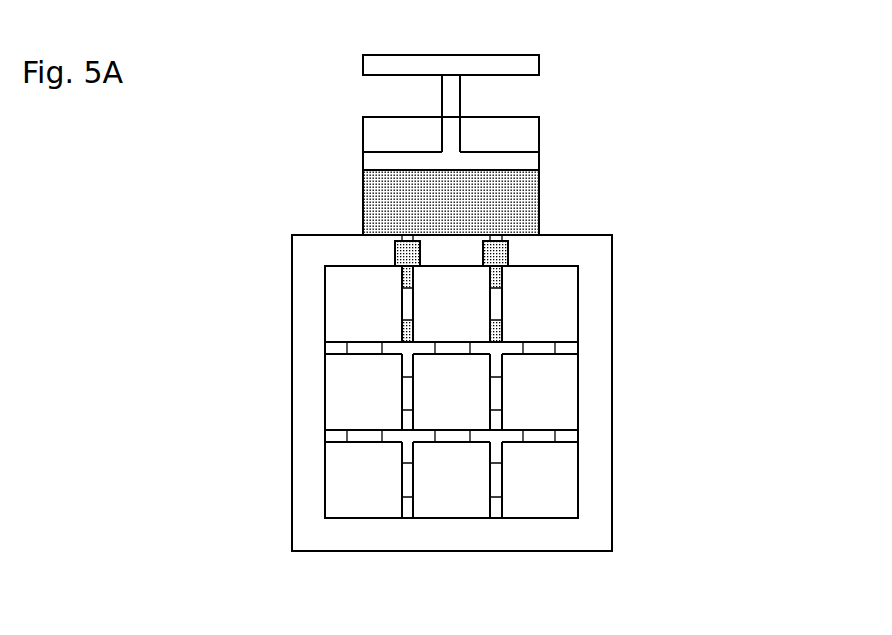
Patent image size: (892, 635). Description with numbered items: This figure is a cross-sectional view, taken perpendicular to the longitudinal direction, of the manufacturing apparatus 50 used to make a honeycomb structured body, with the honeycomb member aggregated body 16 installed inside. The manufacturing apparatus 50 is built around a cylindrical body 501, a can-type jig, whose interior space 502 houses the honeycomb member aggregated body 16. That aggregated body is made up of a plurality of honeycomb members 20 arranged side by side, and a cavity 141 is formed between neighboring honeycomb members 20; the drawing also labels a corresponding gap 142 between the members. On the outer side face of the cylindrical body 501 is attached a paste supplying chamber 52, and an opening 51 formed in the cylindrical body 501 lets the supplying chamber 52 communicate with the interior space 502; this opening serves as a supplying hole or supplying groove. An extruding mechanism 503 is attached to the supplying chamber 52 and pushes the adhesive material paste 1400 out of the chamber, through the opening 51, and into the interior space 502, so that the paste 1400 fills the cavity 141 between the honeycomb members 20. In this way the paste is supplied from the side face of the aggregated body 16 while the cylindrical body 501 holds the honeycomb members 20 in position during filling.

The extruding mechanism 503 is at (497, 62).
The paste supplying chamber 52 is at (540, 133).
The adhesive material paste 1400 is at (372, 207).
The opening 51 is at (497, 255).
The manufacturing apparatus 50 is at (622, 225).
The cylindrical body 501 is at (596, 492).
The honeycomb member aggregated body 16 is at (590, 295).
The interior space 502 is at (325, 476).
The honeycomb member 20 is at (340, 395).
The cavity 141 is at (335, 350).
The second wiring 142 is at (550, 348).